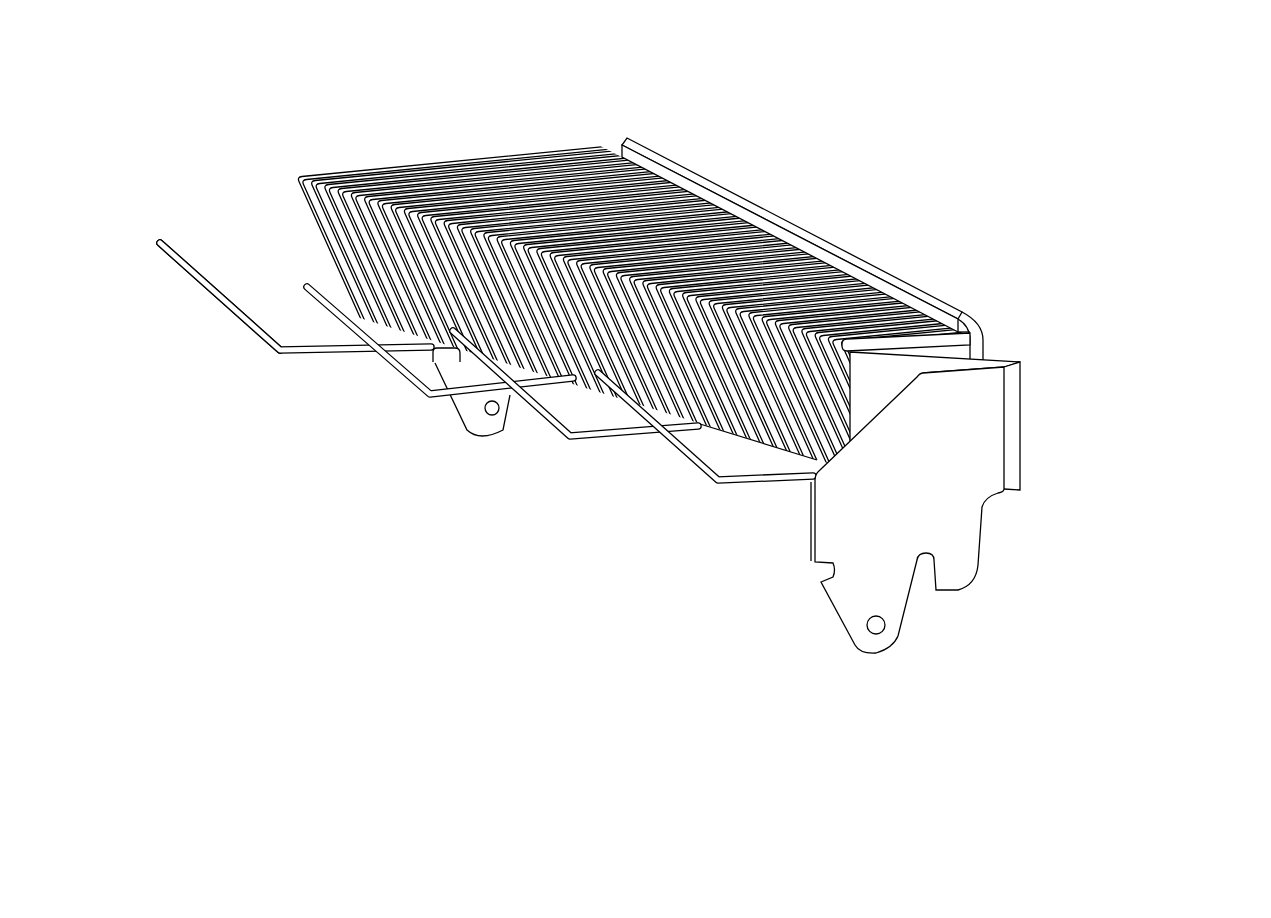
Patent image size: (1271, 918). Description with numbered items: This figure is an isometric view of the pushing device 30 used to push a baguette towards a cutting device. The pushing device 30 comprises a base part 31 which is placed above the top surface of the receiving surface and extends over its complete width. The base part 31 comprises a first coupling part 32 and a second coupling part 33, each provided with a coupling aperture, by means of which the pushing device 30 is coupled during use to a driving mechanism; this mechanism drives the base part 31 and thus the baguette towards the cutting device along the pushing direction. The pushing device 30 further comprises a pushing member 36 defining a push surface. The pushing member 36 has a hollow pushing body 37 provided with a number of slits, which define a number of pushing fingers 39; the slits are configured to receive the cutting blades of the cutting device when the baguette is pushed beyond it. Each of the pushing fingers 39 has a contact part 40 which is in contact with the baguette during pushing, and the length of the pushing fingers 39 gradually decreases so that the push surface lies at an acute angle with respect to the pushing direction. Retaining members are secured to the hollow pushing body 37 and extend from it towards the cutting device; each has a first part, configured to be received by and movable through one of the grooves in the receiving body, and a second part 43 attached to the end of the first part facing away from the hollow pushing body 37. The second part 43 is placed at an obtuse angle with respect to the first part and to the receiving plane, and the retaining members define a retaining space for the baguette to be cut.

The pushing device 30 is at (254, 110).
The base part 31 is at (900, 288).
The first coupling part 32 is at (963, 507).
The second coupling part 33 is at (466, 407).
The pushing member 36 is at (707, 193).
The hollow pushing body 37 is at (990, 338).
The pushing fingers 39 is at (412, 190).
The contact part 40 is at (732, 417).
The second part 43 is at (250, 325).